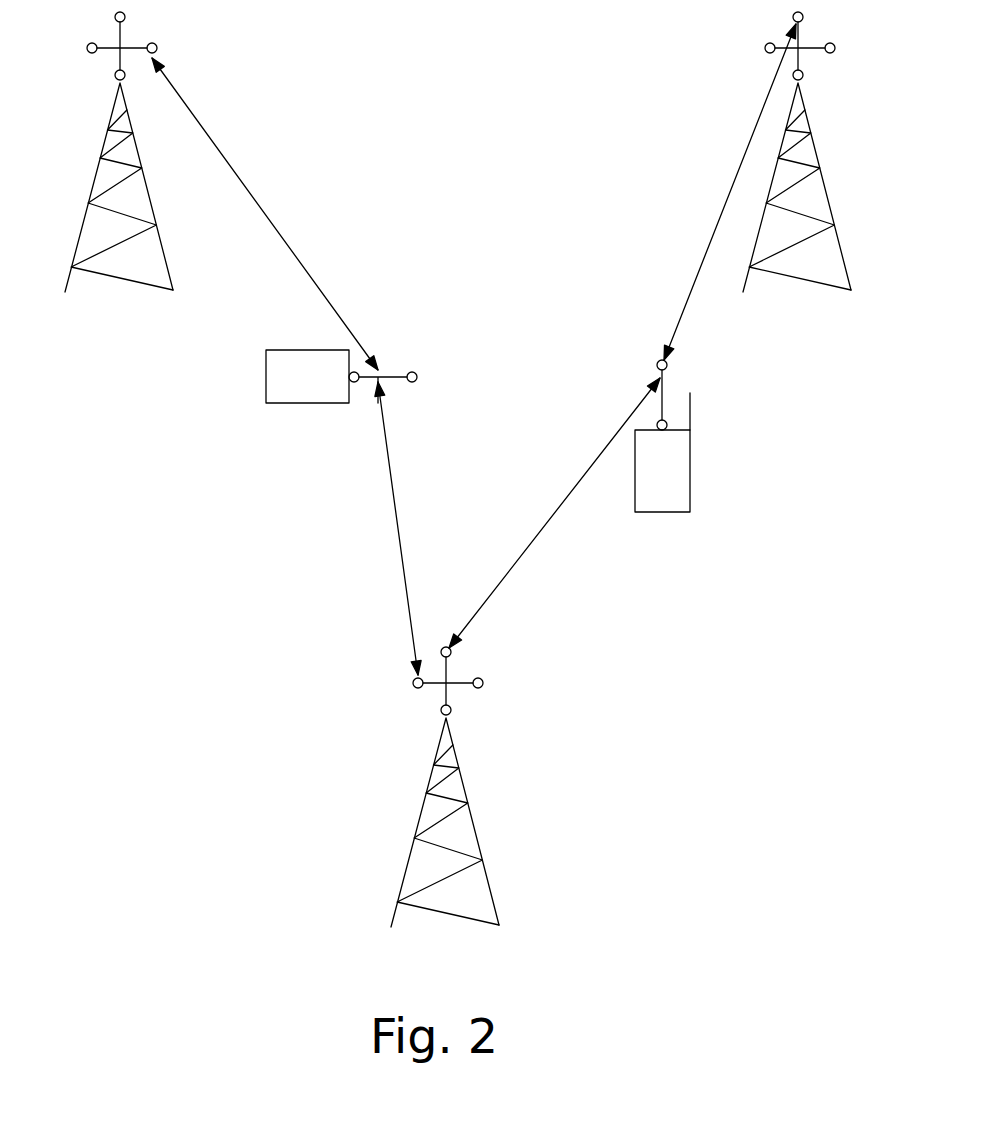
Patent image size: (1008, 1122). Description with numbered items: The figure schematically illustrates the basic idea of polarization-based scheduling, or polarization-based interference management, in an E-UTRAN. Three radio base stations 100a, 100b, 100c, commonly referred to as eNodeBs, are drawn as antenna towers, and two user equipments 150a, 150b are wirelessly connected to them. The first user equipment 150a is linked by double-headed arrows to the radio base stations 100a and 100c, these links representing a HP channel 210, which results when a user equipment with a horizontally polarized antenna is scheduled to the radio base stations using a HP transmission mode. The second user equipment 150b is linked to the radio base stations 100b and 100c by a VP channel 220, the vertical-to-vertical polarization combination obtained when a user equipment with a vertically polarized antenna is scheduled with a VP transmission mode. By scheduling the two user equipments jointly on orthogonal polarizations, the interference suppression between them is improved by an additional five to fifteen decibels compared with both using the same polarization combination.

The radio base station 100a is at (116, 248).
The radio base station 100b is at (807, 251).
The radio base station 100c is at (458, 788).
The user equipment 150a is at (297, 380).
The user equipment 150b is at (657, 475).
The HP channel 210 is at (253, 198).
The VP channel 220 is at (725, 212).